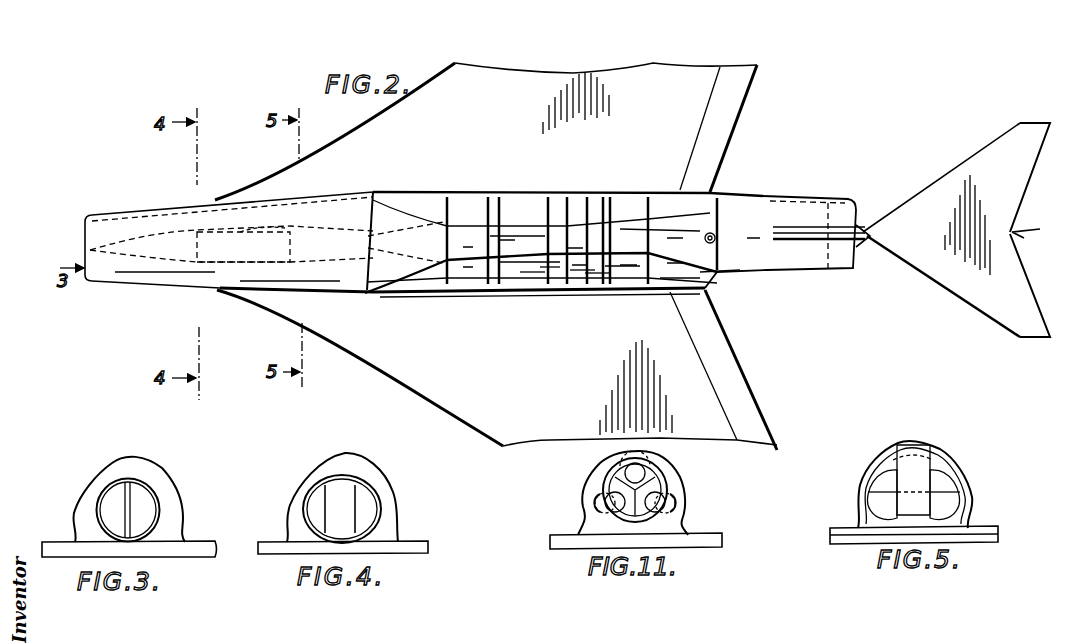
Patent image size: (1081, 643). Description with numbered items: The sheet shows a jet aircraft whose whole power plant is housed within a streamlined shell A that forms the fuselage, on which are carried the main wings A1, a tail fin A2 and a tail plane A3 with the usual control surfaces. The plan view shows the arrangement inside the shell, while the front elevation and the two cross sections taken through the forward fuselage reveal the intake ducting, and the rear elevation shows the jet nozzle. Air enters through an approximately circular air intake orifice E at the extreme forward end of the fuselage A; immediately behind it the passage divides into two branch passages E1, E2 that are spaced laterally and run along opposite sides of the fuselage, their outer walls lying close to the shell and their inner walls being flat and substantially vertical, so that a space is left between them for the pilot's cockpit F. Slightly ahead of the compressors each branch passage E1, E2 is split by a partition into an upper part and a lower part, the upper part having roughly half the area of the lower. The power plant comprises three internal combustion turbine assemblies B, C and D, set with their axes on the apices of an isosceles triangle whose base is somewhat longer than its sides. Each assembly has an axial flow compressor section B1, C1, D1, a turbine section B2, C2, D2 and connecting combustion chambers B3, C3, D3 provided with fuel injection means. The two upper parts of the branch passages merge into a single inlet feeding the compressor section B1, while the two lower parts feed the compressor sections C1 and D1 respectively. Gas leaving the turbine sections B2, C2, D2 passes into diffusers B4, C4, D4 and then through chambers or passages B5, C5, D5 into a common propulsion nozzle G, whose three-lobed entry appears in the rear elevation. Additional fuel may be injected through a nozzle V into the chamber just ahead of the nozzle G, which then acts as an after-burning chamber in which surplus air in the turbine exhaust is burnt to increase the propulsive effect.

In FIG. 2, the streamlined shell A is at (731, 193).
In FIG. 3, the streamlined shell A is at (102, 473).
In FIG. 4, the streamlined shell A is at (372, 468).
In FIG. 11, the streamlined shell A is at (687, 487).
In FIG. 5, the streamlined shell A is at (937, 461).
In FIG. 2, the main wings A1 is at (738, 86).
In FIG. 3, the main wings A1 is at (82, 548).
In FIG. 4, the main wings A1 is at (295, 550).
In FIG. 11, the main wings A1 is at (698, 540).
In FIG. 5, the main wings A1 is at (858, 533).
In FIG. 2, the tail fin A2 is at (1020, 228).
In FIG. 2, the tail plane A3 is at (998, 157).
In FIG. 2, the internal combustion turbine assembly B is at (488, 236).
In FIG. 2, the air compressor section B1 is at (528, 246).
In FIG. 2, the turbine section B2 is at (617, 273).
In FIG. 2, the combustion chamber B3 is at (578, 235).
In FIG. 2, the diffuser B4 is at (632, 228).
In FIG. 2, the chamber or passage B5 is at (698, 227).
In FIG. 11, the chamber or passage B5 is at (642, 477).
In FIG. 2, the internal combustion turbine assembly C is at (547, 210).
In FIG. 2, the air compressor section C1 is at (515, 212).
In FIG. 2, the turbine section C2 is at (607, 215).
In FIG. 2, the combustion chamber C3 is at (575, 203).
In FIG. 2, the diffuser C4 is at (627, 207).
In FIG. 2, the chamber or passage C5 is at (690, 203).
In FIG. 11, the chamber or passage C5 is at (657, 502).
In FIG. 2, the internal combustion turbine assembly D is at (545, 268).
In FIG. 2, the air compressor section D1 is at (532, 272).
In FIG. 2, the turbine section D2 is at (593, 270).
In FIG. 2, the combustion chamber D3 is at (582, 270).
In FIG. 2, the diffuser D4 is at (692, 287).
In FIG. 2, the chamber or passage D5 is at (713, 278).
In FIG. 11, the chamber or passage D5 is at (613, 502).
In FIG. 2, the air intake orifice E is at (90, 240).
In FIG. 3, the air intake orifice E is at (145, 535).
In FIG. 2, the branch intake passage E1 is at (175, 220).
In FIG. 3, the branch intake passage E1 is at (112, 508).
In FIG. 4, the branch intake passage E1 is at (318, 505).
In FIG. 5, the branch intake passage E1 is at (885, 503).
In FIG. 2, the branch intake passage E2 is at (185, 272).
In FIG. 3, the branch intake passage E2 is at (138, 505).
In FIG. 4, the branch intake passage E2 is at (368, 498).
In FIG. 5, the branch intake passage E2 is at (943, 505).
In FIG. 2, the cockpit F is at (273, 245).
In FIG. 5, the cockpit F is at (922, 465).
In FIG. 2, the propulsion nozzle G is at (813, 213).
In FIG. 11, the propulsion nozzle G is at (652, 487).
In FIG. 2, the fuel injection nozzle V is at (715, 240).